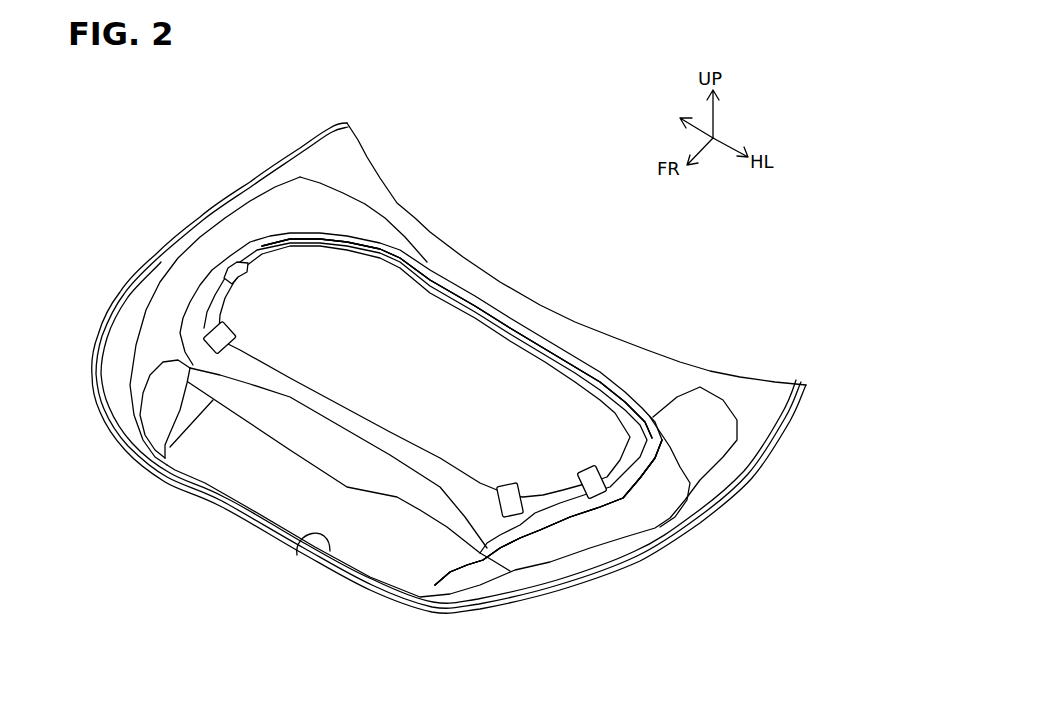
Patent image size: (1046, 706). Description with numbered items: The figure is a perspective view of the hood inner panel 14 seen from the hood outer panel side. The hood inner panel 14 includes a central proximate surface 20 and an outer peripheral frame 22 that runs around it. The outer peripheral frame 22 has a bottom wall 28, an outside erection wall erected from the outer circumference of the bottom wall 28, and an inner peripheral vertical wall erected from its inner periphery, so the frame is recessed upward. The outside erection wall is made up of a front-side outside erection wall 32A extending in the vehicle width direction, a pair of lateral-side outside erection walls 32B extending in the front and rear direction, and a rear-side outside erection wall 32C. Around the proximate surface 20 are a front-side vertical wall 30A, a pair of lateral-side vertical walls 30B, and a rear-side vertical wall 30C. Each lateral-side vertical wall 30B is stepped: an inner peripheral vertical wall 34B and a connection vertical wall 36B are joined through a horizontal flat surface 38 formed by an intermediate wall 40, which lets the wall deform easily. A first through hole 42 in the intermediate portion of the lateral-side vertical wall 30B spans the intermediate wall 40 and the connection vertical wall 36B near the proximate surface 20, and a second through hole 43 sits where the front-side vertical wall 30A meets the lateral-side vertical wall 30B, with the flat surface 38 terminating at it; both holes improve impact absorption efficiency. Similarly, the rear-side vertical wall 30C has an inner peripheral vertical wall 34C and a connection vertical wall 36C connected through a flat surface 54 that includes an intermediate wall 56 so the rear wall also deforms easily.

The hood inner panel 14 is at (426, 106).
The proximate surface 20 is at (337, 270).
The outer peripheral frame 22 is at (707, 457).
The bottom wall 28 is at (683, 537).
The front-side vertical wall 30A is at (363, 420).
The lateral-side vertical wall 30B is at (237, 247).
The rear-side vertical wall 30C is at (467, 300).
The front-side outside erection wall 32A is at (317, 547).
The lateral-side outside erection wall 32B is at (190, 240).
The rear-side outside erection wall 32C is at (517, 310).
The inner peripheral vertical wall 34B is at (600, 537).
The inner peripheral vertical wall 34C is at (653, 413).
The connection vertical wall 36B is at (543, 497).
The connection vertical wall 36C is at (660, 400).
The flat surface 38 is at (560, 513).
The intermediate wall 40 is at (560, 513).
The first through hole 42 is at (219, 270).
The second through hole 43 is at (232, 337).
The flat surface 54 is at (593, 383).
The intermediate wall 56 is at (593, 383).